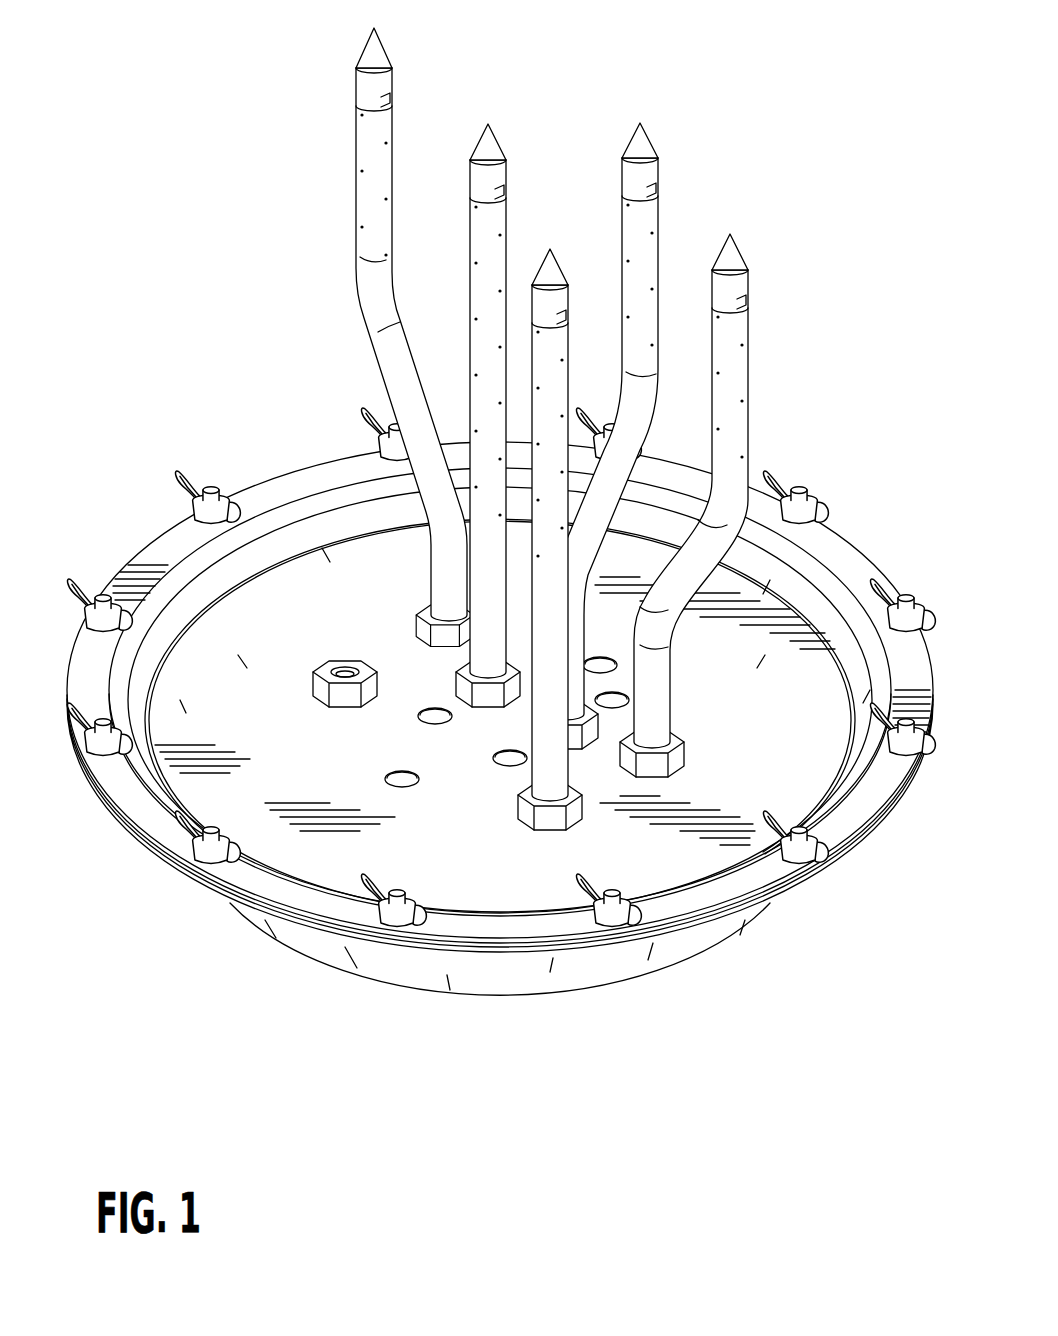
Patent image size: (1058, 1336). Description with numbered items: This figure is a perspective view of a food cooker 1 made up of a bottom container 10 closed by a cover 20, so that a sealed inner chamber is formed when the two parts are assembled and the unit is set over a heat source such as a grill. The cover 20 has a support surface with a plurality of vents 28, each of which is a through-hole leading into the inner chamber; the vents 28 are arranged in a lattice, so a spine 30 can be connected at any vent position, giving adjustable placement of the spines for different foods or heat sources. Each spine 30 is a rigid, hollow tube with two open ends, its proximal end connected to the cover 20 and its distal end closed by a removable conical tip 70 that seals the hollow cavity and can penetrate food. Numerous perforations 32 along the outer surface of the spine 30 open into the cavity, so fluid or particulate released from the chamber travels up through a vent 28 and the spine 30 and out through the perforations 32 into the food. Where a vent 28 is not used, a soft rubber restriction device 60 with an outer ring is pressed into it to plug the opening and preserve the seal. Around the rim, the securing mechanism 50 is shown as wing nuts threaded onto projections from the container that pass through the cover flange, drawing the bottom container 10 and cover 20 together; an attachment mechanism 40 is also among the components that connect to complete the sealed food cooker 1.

The food cooker 1 is at (249, 434).
The bottom container 10 is at (620, 972).
The cover 20 is at (840, 557).
The vent 28 is at (420, 728).
The spine 30 is at (476, 230).
The perforations 32 is at (388, 272).
The attachment mechanism 40 is at (530, 822).
The securing mechanism 50 is at (912, 770).
The restriction device 60 is at (325, 668).
The tip 70 is at (638, 160).